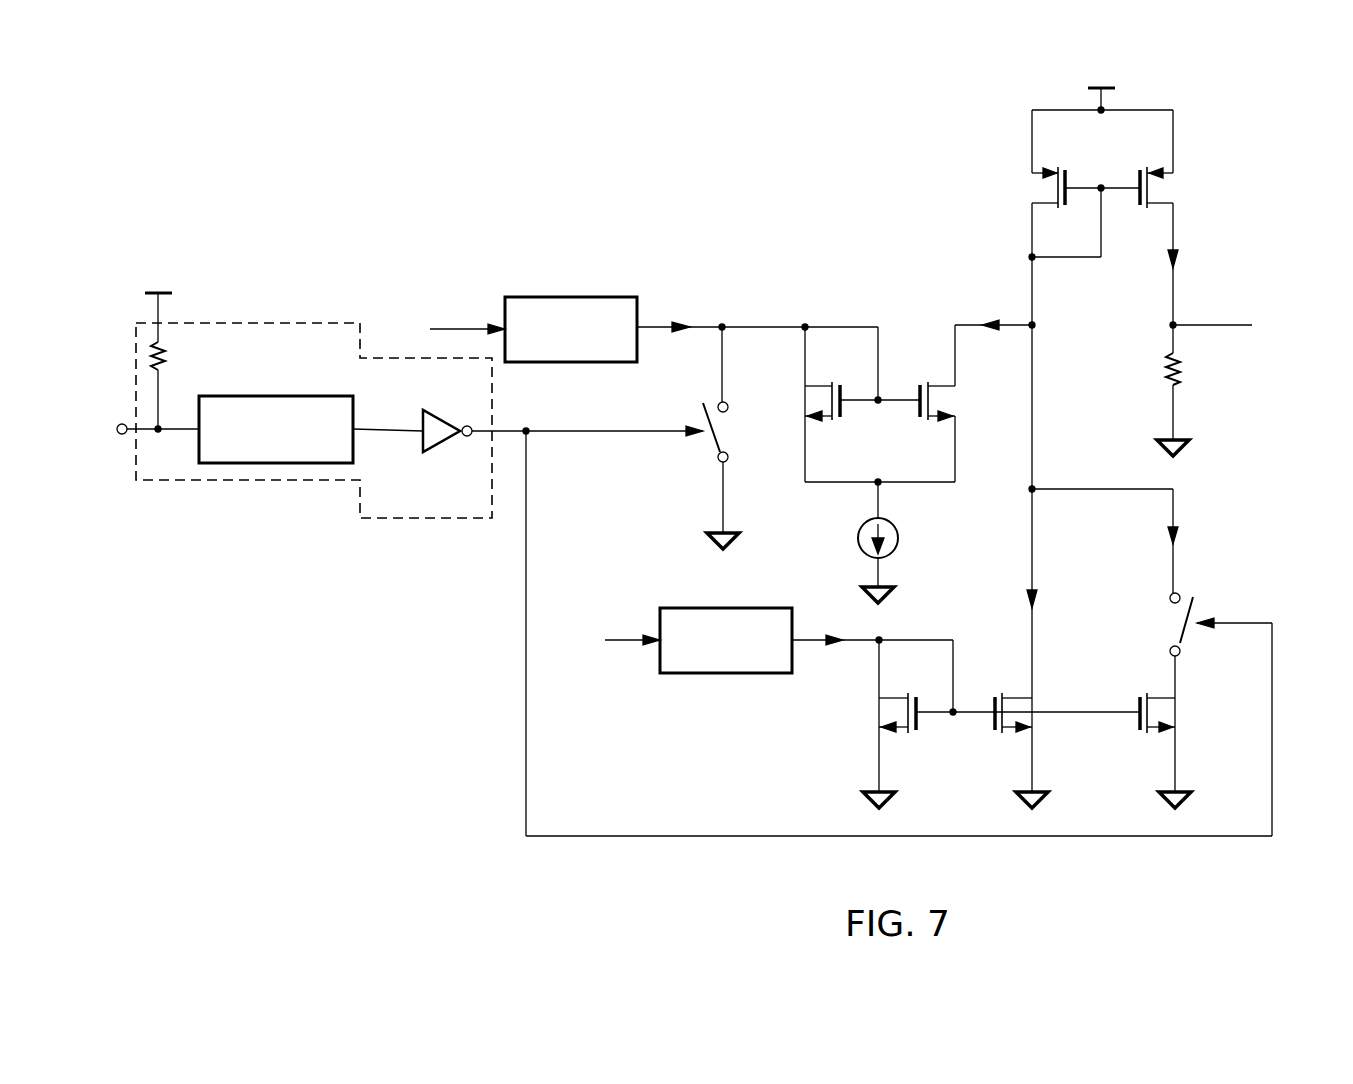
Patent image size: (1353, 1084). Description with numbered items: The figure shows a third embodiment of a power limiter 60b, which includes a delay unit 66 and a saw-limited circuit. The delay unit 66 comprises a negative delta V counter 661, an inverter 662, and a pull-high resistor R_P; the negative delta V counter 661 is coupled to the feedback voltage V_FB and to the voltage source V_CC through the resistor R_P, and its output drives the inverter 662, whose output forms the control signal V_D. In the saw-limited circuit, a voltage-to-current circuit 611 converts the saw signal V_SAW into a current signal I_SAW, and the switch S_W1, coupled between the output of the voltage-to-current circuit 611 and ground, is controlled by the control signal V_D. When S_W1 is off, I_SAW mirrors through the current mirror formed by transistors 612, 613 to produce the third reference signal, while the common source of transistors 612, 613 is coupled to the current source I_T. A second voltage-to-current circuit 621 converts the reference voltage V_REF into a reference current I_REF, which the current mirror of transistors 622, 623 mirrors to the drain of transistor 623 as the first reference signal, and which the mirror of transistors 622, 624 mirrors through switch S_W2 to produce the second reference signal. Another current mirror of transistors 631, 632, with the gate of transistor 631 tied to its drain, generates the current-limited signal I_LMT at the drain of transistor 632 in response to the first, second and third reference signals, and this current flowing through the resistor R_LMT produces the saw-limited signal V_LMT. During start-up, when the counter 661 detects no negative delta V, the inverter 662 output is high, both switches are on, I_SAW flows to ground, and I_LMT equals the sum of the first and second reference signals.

The power limiter 60b is at (1348, 84).
The delay unit 66 is at (237, 323).
The negative delta V counter 661 is at (278, 396).
The inverter 662 is at (440, 452).
The voltage-to-current circuit 611 is at (537, 297).
The transistor 612 is at (842, 422).
The transistor 613 is at (918, 380).
The voltage-to-current circuit 621 is at (688, 608).
The transistor 622 is at (917, 735).
The transistor 623 is at (995, 735).
The transistor 624 is at (1140, 735).
The transistor 631 is at (1065, 167).
The transistor 632 is at (1140, 210).